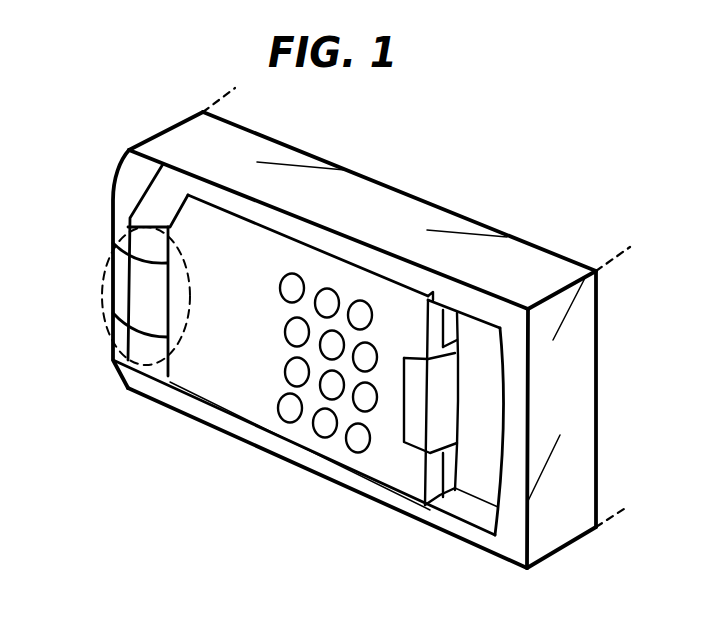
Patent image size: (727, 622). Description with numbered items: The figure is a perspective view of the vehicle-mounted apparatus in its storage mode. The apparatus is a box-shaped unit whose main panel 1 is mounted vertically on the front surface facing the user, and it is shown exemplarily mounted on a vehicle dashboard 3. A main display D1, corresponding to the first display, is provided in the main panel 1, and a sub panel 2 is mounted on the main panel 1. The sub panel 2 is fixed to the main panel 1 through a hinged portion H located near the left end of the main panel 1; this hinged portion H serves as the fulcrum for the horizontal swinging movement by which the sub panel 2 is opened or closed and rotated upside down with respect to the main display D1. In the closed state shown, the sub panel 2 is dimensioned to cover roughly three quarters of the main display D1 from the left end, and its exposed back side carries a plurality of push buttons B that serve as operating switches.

The main panel 1 is at (517, 550).
The sub panel 2 is at (215, 392).
The vehicle dashboard 3 is at (648, 260).
The push buttons B is at (353, 450).
The main display D1 is at (477, 490).
The hinged portion H is at (104, 270).